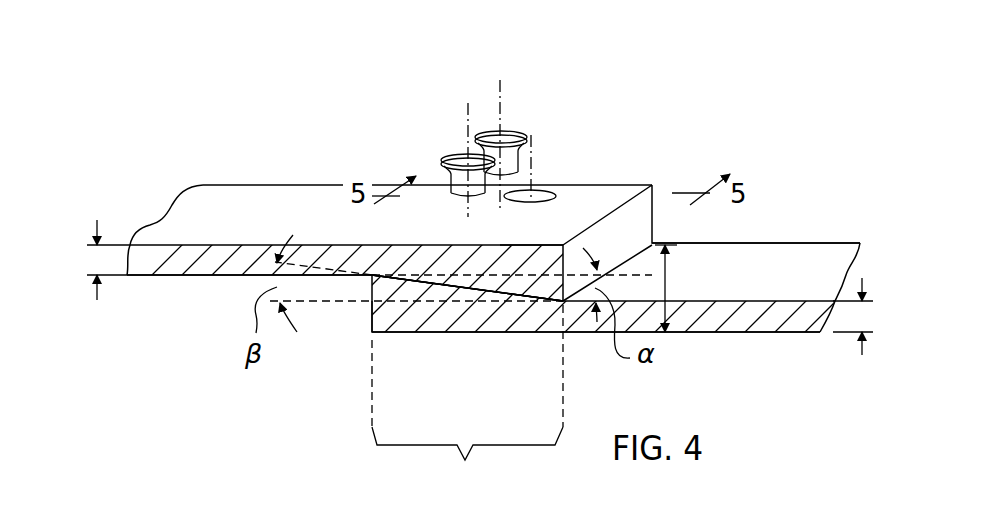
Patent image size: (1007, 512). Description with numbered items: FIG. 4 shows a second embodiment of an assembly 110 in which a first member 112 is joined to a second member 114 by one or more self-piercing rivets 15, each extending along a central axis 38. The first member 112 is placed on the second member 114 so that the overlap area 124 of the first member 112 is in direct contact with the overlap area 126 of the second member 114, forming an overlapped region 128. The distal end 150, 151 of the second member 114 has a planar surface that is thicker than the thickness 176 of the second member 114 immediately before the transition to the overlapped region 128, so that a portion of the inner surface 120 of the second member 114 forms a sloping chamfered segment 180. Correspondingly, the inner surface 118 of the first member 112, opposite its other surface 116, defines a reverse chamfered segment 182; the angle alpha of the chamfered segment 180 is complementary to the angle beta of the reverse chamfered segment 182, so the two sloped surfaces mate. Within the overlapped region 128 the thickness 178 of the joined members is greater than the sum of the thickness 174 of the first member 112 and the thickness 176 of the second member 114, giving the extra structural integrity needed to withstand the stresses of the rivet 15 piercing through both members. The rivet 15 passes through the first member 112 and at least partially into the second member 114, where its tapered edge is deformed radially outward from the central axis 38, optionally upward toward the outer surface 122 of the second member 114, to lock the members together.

The self-piercing rivet 15 is at (565, 125).
The central axis 38 is at (501, 97).
The assembly 110 is at (785, 178).
The first member 112 is at (160, 188).
The second member 114 is at (802, 350).
The first surface of first panel 116 is at (233, 200).
The inner surface of the first member 118 is at (200, 277).
The inner surface of the second member 120 is at (813, 248).
The outer surface of the second member 122 is at (760, 333).
The overlap area of the first member 124 is at (447, 288).
The overlap area of the second member 126 is at (493, 290).
The overlapped region 128 is at (467, 398).
The distal end of the second member 150 is at (370, 317).
The adhesive layer 151 is at (370, 317).
The thickness of the first member 174 is at (98, 260).
The thickness of the second member 176 is at (868, 314).
The thickness of the joined members in the overlapped region 178 is at (667, 275).
The chamfered segment 180 is at (425, 318).
The reverse chamfered segment 182 is at (507, 263).